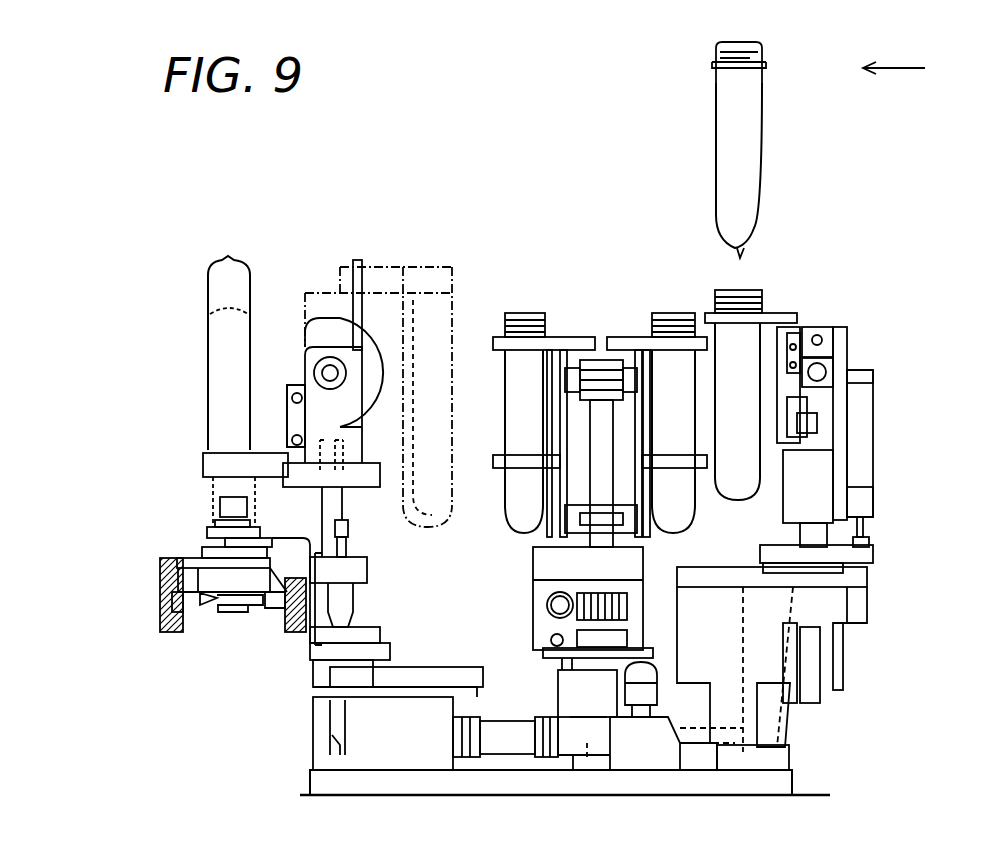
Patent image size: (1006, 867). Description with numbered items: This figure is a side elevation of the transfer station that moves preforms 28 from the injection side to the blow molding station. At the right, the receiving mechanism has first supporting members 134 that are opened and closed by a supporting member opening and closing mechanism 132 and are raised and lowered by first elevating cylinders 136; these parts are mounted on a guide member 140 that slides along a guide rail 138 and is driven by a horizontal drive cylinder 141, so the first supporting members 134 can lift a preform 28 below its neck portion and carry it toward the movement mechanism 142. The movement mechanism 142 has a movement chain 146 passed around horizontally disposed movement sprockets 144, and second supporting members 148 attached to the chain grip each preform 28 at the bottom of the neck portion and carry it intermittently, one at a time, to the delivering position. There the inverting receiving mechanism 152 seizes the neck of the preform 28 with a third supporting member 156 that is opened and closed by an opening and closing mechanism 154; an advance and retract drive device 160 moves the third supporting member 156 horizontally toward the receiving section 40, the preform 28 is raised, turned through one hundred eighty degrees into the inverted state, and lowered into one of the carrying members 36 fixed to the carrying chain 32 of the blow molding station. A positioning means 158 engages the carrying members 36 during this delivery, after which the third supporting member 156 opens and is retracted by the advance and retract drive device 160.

The preform 28 is at (762, 170).
The carrying chain 32 is at (190, 613).
The carrying member 36 is at (235, 583).
The receiving section 40 is at (148, 543).
The supporting member opening and closing mechanism 132 is at (822, 325).
The first supporting member 134 is at (790, 312).
The first elevating cylinder 136 is at (860, 450).
The guide rail 138 is at (727, 577).
The guide member 140 is at (840, 558).
The horizontal drive cylinder 141 is at (592, 775).
The movement mechanism 142 is at (617, 240).
The movement sprocket 144 is at (597, 352).
The movement chain 146 is at (568, 388).
The second supporting member 148 is at (522, 340).
The inverting receiving mechanism 152 is at (368, 223).
The opening and closing mechanism 154 is at (293, 415).
The third supporting member 156 is at (205, 470).
The positioning means 158 is at (300, 552).
The advance and retract drive device 160 is at (497, 747).